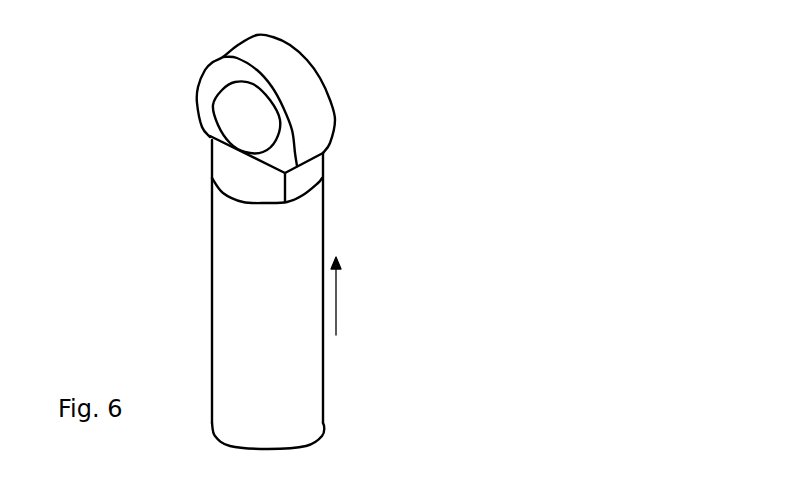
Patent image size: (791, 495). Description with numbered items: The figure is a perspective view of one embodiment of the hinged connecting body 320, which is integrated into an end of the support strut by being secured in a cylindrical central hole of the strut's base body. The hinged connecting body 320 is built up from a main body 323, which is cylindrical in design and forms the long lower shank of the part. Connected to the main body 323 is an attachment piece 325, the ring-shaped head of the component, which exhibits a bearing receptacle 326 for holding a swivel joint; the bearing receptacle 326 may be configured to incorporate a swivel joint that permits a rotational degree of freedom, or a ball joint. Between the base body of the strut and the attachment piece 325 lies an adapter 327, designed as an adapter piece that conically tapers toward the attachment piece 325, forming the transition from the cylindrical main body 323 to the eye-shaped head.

The hinged connecting body 320 is at (195, 168).
The main body 323 is at (307, 237).
The attachment piece 325 is at (305, 55).
The bearing receptacle 326 is at (305, 80).
The adapter 327 is at (317, 165).